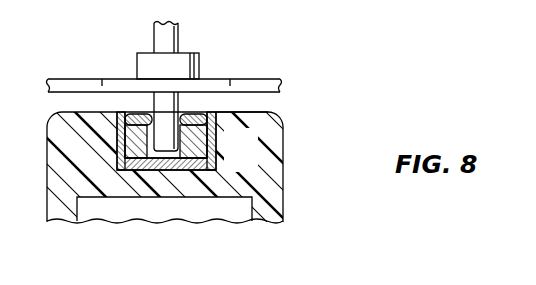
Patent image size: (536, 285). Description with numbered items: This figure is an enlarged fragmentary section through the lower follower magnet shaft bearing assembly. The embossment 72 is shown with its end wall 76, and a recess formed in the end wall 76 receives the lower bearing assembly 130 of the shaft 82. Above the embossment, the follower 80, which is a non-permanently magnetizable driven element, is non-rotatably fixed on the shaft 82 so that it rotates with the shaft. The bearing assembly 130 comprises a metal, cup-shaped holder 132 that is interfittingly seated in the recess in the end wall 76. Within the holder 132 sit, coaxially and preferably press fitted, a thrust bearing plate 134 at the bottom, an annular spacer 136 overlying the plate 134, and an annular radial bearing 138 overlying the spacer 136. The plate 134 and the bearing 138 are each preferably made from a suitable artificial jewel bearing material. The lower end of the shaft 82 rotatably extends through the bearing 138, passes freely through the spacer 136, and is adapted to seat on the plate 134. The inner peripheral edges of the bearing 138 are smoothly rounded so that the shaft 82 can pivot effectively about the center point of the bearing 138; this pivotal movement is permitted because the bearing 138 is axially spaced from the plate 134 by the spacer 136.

The embossment 72 is at (284, 150).
The end wall 76 is at (248, 113).
The follower 80 is at (262, 83).
The shaft 82 is at (168, 40).
The lower bearing assembly 130 is at (141, 112).
The cup-shaped holder 132 is at (213, 153).
The thrust bearing plate 134 is at (190, 172).
The annular spacer 136 is at (131, 171).
The annular radial bearing 138 is at (217, 138).